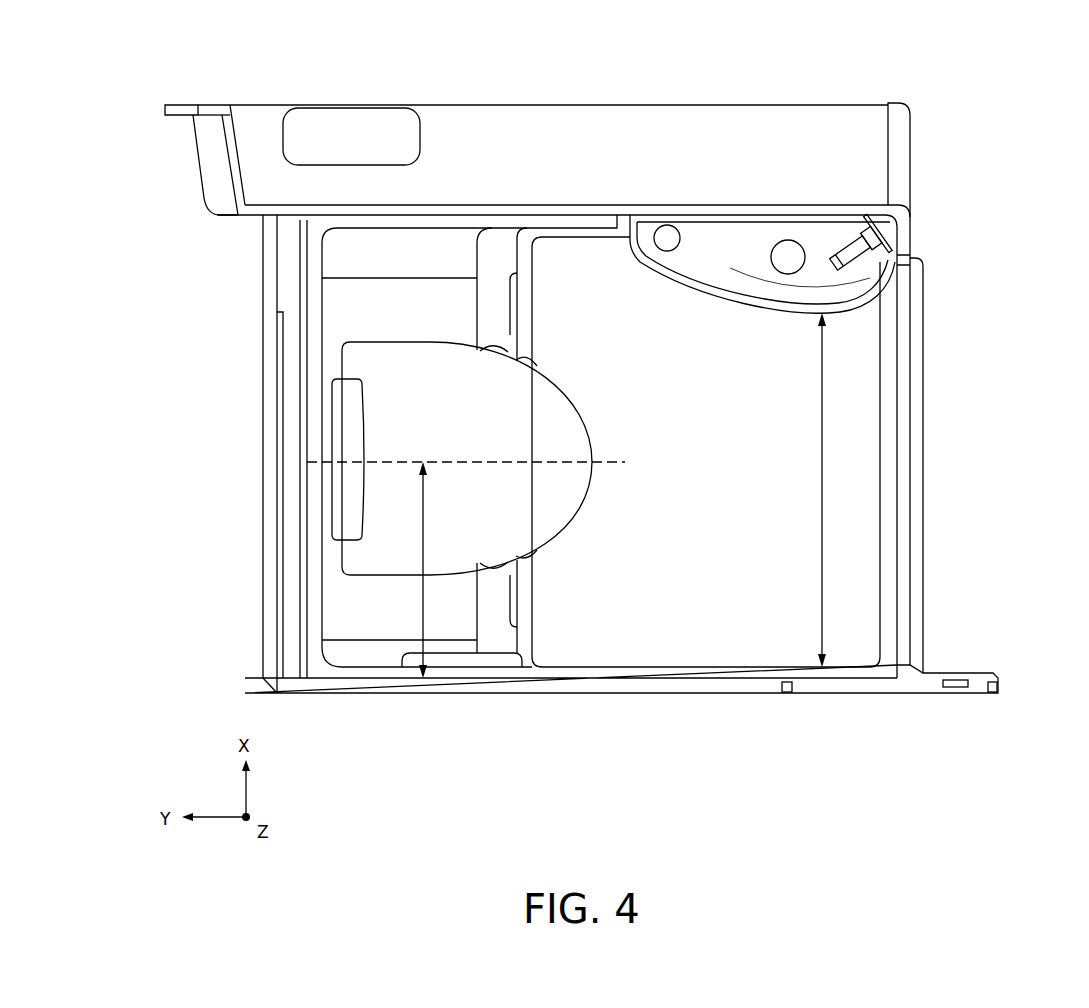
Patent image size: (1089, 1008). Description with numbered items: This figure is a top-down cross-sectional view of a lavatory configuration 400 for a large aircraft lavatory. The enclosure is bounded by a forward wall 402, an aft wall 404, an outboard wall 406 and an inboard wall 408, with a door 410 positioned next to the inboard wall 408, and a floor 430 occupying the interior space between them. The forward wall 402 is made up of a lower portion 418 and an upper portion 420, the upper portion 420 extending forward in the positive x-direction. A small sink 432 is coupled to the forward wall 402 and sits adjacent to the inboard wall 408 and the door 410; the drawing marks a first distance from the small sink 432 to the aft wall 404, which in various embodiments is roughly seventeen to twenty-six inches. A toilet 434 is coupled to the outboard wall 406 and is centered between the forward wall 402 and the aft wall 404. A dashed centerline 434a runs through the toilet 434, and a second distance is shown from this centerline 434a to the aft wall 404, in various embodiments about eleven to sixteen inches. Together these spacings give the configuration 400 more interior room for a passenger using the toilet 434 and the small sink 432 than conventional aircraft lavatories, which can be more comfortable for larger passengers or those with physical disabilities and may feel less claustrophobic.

The lavatory configuration 400 is at (72, 138).
The forward wall 402 is at (644, 92).
The aft wall 404 is at (598, 693).
The outboard wall 406 is at (262, 370).
The inboard wall 408 is at (913, 227).
The door 410 is at (925, 450).
The lower portion 418 is at (617, 228).
The upper portion 420 is at (880, 107).
The floor 430 is at (710, 581).
The small sink 432 is at (752, 296).
The toilet 434 is at (552, 380).
The centerline 434a is at (625, 462).